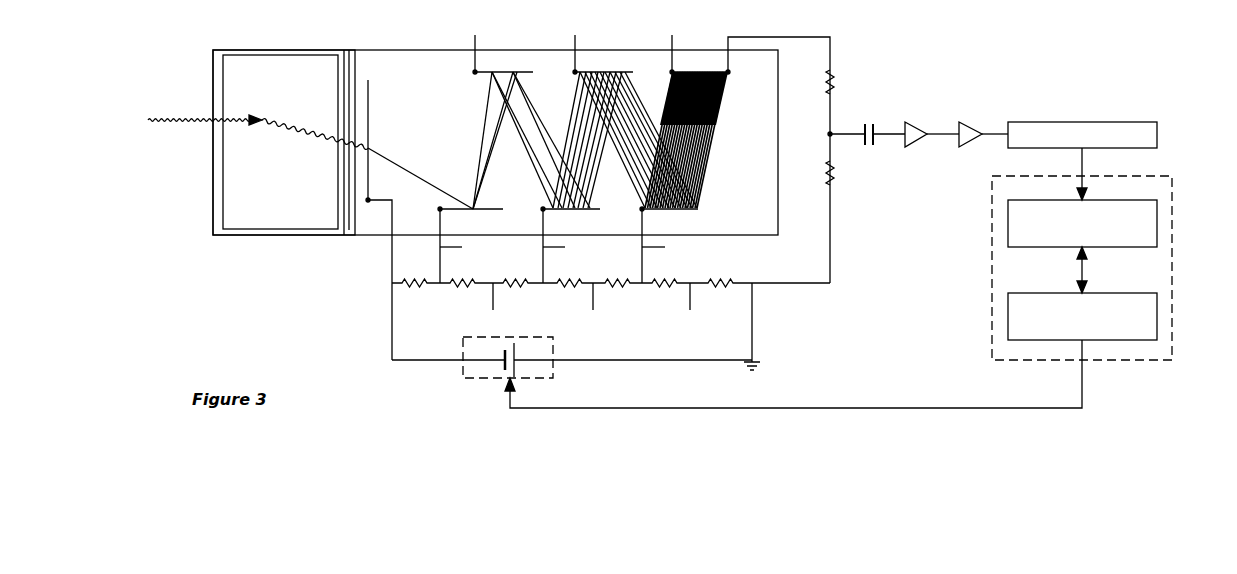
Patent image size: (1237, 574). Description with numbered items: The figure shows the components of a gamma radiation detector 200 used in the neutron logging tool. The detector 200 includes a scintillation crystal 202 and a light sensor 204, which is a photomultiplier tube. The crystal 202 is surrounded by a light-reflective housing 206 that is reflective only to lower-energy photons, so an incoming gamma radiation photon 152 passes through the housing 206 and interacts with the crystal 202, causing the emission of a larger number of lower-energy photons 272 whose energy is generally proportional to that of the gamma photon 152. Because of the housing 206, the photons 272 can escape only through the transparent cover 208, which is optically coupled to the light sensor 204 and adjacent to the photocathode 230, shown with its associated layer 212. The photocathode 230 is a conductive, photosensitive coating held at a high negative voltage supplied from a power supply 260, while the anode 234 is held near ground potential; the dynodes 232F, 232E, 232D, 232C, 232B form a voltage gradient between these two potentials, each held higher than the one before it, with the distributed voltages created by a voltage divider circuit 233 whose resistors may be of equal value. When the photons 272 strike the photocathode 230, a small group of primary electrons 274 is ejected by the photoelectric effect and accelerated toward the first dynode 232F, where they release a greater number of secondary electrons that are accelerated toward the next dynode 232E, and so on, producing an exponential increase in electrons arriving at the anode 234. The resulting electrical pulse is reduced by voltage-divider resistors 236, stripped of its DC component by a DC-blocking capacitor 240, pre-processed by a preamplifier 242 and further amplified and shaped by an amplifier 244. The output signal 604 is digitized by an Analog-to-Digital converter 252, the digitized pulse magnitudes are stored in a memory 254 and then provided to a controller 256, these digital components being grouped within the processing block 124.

The data processing system 124 is at (992, 210).
The gamma radiation photon 152 is at (189, 124).
The detector 200 is at (253, 308).
The scintillation crystal 202 is at (313, 73).
The light sensor 204 is at (396, 50).
The light-reflective housing 206 is at (250, 48).
The transparent cover 208 is at (340, 72).
The photocathode 212 is at (349, 232).
The photocathode 230 is at (370, 102).
The dynode 232B is at (677, 210).
The dynode 232C is at (605, 72).
The dynode 232D is at (577, 210).
The dynode 232E is at (505, 72).
The first dynode 232F is at (479, 210).
The voltage divider circuit 233 is at (370, 285).
The anode 234 is at (700, 72).
The voltage-divider resistors 236 is at (849, 128).
The DC-blocking capacitor 240 is at (866, 124).
The preamplifier 242 is at (929, 143).
The amplifier 244 is at (967, 124).
The Analog-to-Digital converter 252 is at (1082, 161).
The memory 254 is at (1082, 246).
The controller 256 is at (831, 350).
The power supply 260 is at (487, 380).
The lower-energy photons 272 is at (313, 136).
The primary electrons 274 is at (390, 160).
The digitized signal (Fig. 4) 604 is at (993, 133).